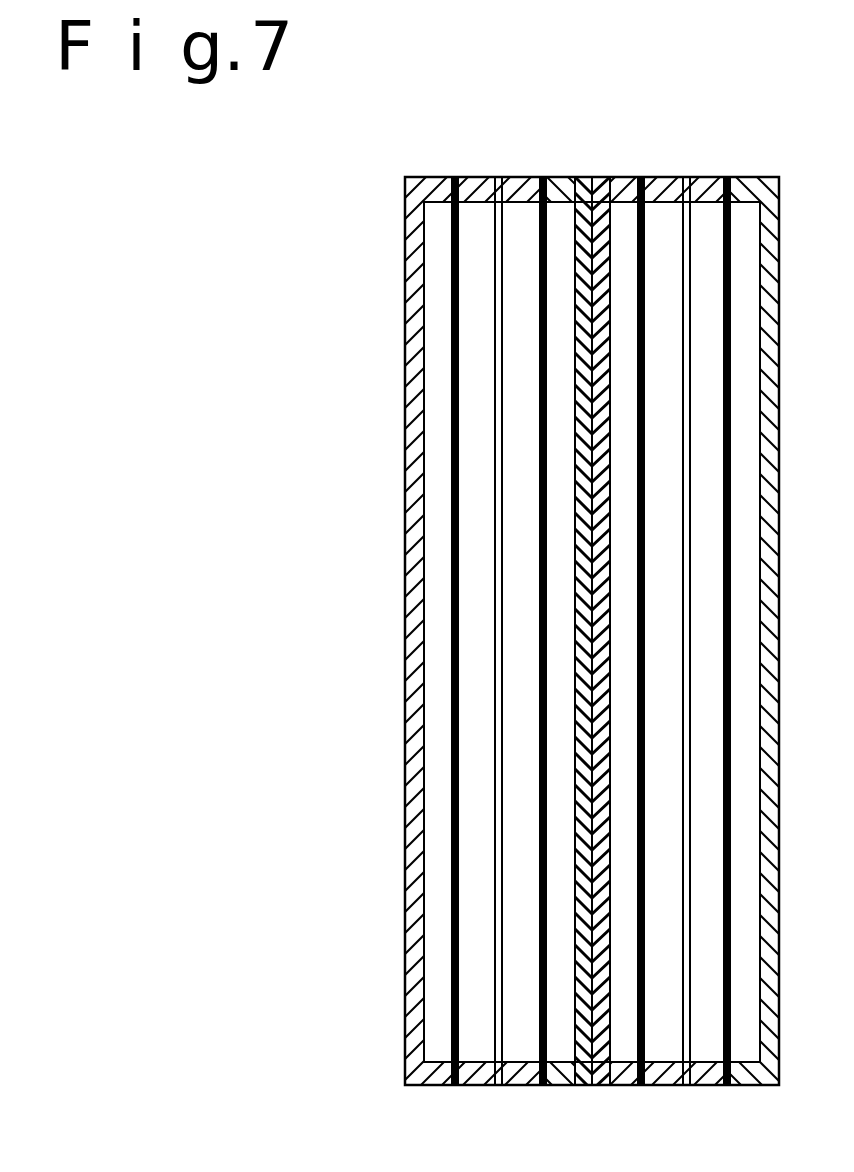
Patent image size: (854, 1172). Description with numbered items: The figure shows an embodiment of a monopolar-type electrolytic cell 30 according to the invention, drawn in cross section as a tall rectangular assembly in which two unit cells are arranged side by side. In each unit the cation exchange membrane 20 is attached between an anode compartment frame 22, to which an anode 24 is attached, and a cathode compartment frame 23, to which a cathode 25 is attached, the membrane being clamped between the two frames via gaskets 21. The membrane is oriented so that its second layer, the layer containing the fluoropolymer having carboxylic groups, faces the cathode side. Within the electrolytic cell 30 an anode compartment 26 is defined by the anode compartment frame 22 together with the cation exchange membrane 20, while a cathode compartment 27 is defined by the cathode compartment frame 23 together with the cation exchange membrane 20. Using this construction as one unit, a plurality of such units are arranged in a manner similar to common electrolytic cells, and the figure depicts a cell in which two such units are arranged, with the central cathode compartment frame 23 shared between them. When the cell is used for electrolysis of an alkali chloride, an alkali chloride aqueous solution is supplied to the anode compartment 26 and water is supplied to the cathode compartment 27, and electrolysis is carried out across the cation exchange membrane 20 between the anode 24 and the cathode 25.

The cation exchange membrane 20 is at (498, 932).
The gaskets 21 is at (495, 179).
The anode compartment frame 22 is at (410, 290).
The cathode compartment frame 23 is at (573, 178).
The anode 24 is at (455, 858).
The cathode 25 is at (546, 1040).
The anode compartment 26 is at (467, 480).
The cathode compartment 27 is at (528, 563).
The electrolytic cell 30 is at (255, 303).